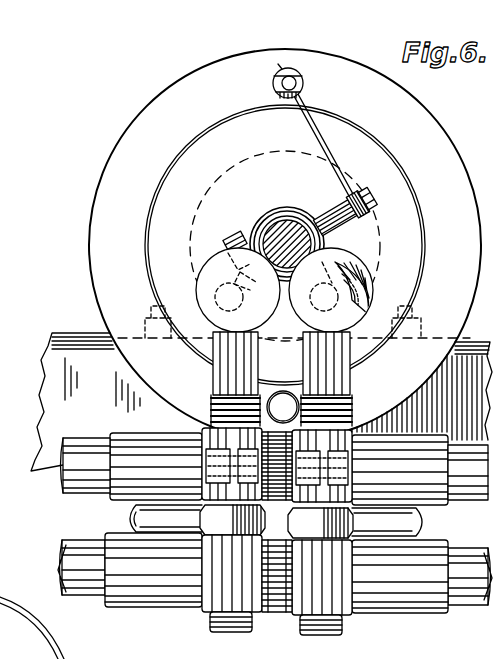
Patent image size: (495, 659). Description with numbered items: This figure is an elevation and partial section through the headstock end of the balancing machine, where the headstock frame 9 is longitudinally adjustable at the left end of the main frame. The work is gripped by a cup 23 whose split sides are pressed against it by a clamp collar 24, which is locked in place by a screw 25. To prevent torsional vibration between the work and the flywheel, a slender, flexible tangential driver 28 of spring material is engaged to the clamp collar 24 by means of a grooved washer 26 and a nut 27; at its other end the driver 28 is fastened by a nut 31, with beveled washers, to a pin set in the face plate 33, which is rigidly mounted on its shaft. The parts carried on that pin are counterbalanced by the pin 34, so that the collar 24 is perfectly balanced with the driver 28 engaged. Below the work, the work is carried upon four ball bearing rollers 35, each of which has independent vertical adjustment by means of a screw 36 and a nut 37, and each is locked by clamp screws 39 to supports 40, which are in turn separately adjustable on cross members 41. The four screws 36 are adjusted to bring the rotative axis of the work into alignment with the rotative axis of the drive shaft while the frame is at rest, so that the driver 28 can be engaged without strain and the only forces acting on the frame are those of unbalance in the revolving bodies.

The headstock frame 9 is at (261, 388).
The cup 23 is at (296, 214).
The clamp collar 24 is at (273, 208).
The screw 25 is at (237, 233).
The grooved washer 26 is at (372, 212).
The nut 27 is at (370, 203).
The tangential driver 28 is at (328, 151).
The nut 31 is at (304, 85).
The face plate 33 is at (285, 245).
The pin 34 is at (283, 407).
The ball bearing rollers 35 is at (284, 290).
The screw 36 is at (218, 368).
The nut 37 is at (276, 521).
The clamp screws 39 is at (200, 460).
The supports 40 is at (276, 573).
The cross members 41 is at (62, 484).